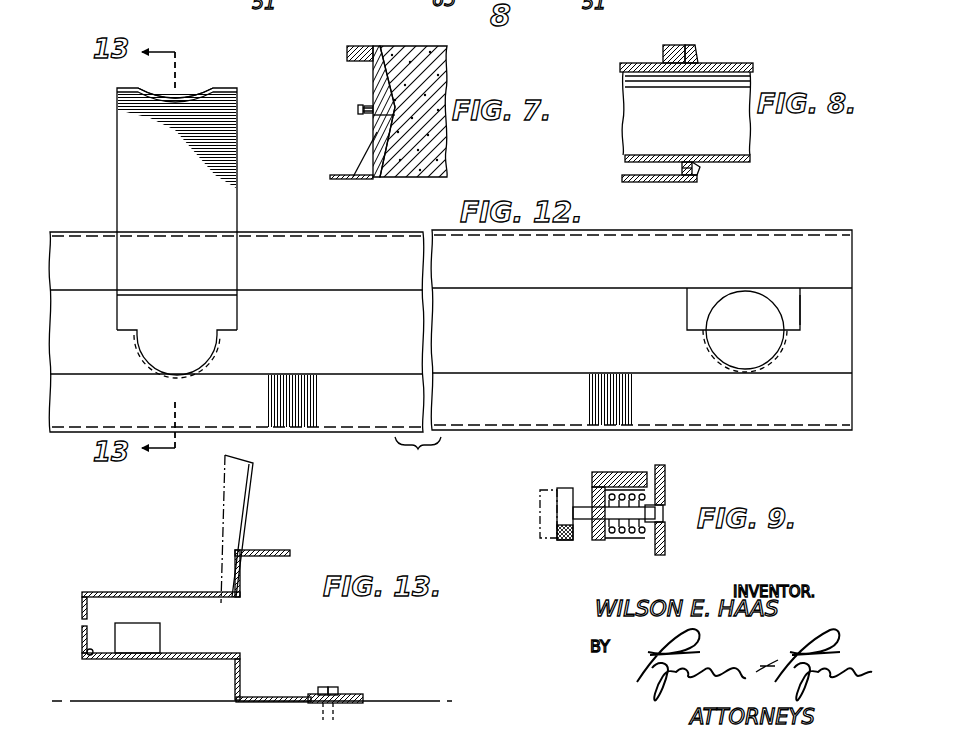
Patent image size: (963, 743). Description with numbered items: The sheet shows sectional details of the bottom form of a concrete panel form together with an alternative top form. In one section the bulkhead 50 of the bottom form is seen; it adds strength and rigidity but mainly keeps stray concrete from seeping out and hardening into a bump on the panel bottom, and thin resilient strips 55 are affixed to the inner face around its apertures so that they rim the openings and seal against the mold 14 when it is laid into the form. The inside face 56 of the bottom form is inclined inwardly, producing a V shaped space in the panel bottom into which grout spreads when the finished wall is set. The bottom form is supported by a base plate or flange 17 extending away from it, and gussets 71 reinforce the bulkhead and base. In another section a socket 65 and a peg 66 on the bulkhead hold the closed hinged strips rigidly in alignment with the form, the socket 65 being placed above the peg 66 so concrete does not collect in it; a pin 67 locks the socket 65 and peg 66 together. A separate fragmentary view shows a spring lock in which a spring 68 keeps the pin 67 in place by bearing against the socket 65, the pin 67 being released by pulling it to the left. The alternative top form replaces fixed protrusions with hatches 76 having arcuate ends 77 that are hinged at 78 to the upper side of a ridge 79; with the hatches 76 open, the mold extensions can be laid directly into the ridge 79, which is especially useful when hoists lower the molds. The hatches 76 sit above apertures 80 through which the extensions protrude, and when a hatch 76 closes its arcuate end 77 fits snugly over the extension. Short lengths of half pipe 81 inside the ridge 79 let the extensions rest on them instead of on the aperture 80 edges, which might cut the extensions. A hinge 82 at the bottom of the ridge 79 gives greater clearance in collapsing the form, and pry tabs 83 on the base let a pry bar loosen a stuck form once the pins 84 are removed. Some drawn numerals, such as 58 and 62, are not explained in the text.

In FIG. 8, the mold 14 is at (753, 62).
In FIG. 7, the base plate or flange 17 is at (340, 180).
In FIG. 8, the base plate or flange 17 is at (650, 183).
In FIG. 8, the bulkhead 50 is at (674, 169).
In FIG. 8, the resilient strips 55 is at (693, 62).
In FIG. 7, the inside face 56 is at (387, 70).
In FIG. 7, the top flange 58 is at (375, 34).
In FIG. 8, the top flange 58 is at (663, 52).
In FIG. 7, the wall plate 62 is at (373, 85).
In FIG. 7, the socket 65 is at (372, 101).
In FIG. 9, the socket 65 is at (622, 473).
In FIG. 7, the peg 66 is at (371, 118).
In FIG. 9, the peg 66 is at (667, 545).
In FIG. 7, the pin 67 is at (357, 108).
In FIG. 9, the pin 67 is at (566, 488).
In FIG. 9, the spring 68 is at (608, 535).
In FIG. 7, the gussets 71 is at (362, 151).
In FIG. 12, the hatches 76 is at (130, 154).
In FIG. 13, the hatches 76 is at (248, 505).
In FIG. 12, the arcuate ends 77 is at (195, 92).
In FIG. 12, the hinge 78 is at (225, 292).
In FIG. 13, the hinge 78 is at (222, 598).
In FIG. 12, the ridge 79 is at (450, 339).
In FIG. 13, the ridge 79 is at (80, 604).
In FIG. 12, the apertures 80 is at (207, 351).
In FIG. 12, the half pipe 81 is at (790, 352).
In FIG. 13, the half pipe 81 is at (160, 641).
In FIG. 13, the hinge 82 is at (97, 660).
In FIG. 13, the pry tabs 83 is at (362, 697).
In FIG. 13, the pins 84 is at (333, 687).